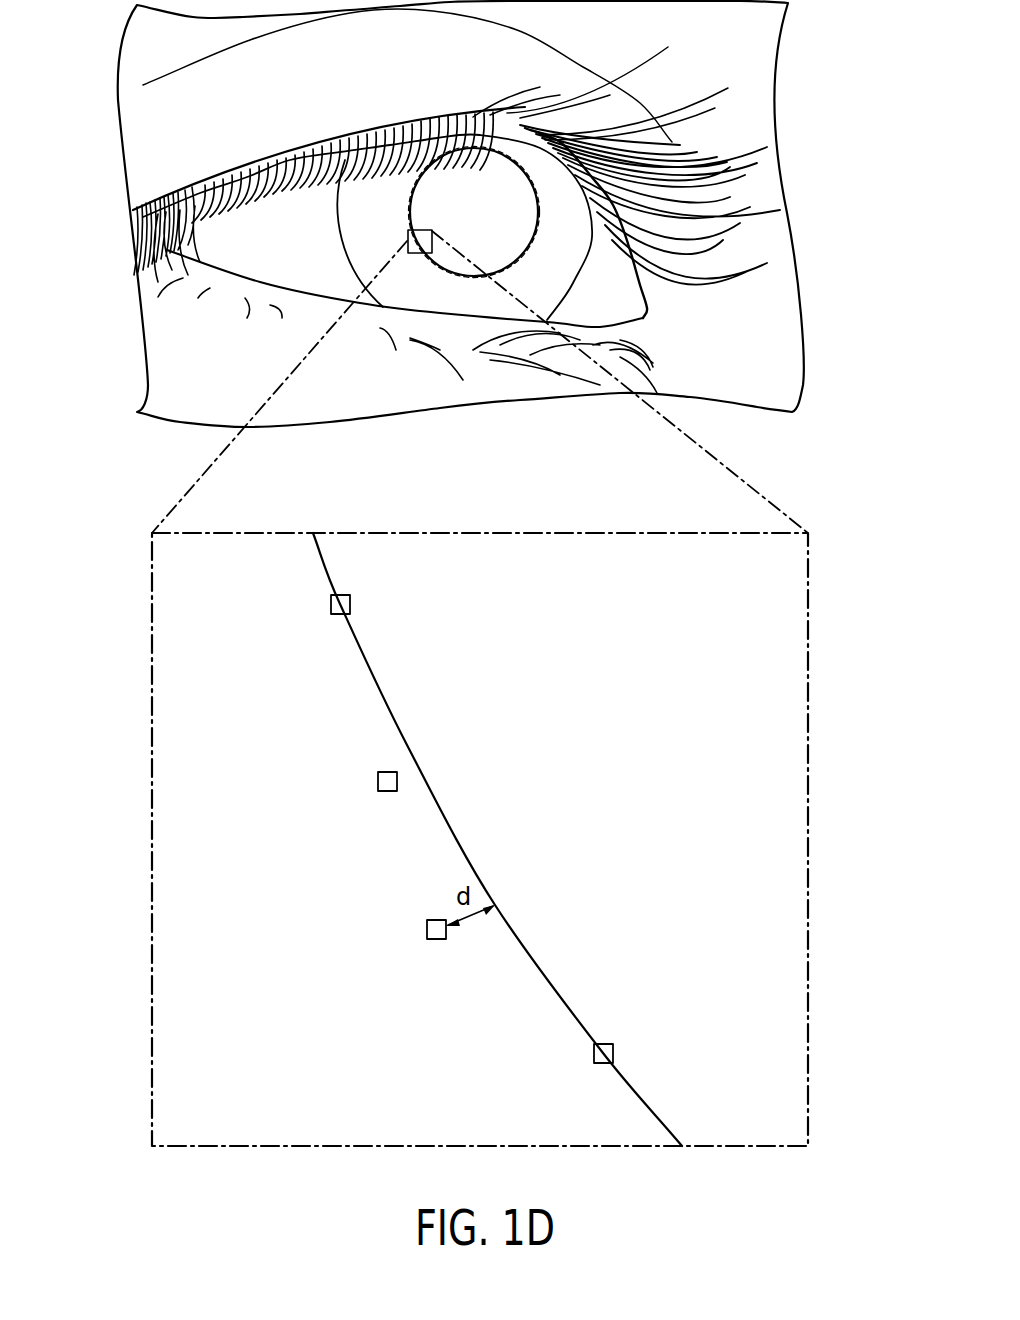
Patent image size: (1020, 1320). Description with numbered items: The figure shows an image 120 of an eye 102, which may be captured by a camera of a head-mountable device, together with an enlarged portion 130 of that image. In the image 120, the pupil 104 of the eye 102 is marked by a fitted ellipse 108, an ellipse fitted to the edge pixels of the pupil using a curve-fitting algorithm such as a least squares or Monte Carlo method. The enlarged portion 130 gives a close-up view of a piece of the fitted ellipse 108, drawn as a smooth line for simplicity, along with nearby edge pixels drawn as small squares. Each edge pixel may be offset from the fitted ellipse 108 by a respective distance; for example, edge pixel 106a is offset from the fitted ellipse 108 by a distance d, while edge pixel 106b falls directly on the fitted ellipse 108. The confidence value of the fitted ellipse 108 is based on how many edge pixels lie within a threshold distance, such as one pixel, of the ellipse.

The eye 102 is at (656, 301).
The pupil 104 is at (410, 206).
The edge pixel 106a is at (436, 940).
The edge pixel 106b is at (607, 1044).
The fitted ellipse 108 is at (420, 178).
The image 120 is at (120, 100).
The enlarged portion 130 is at (152, 590).